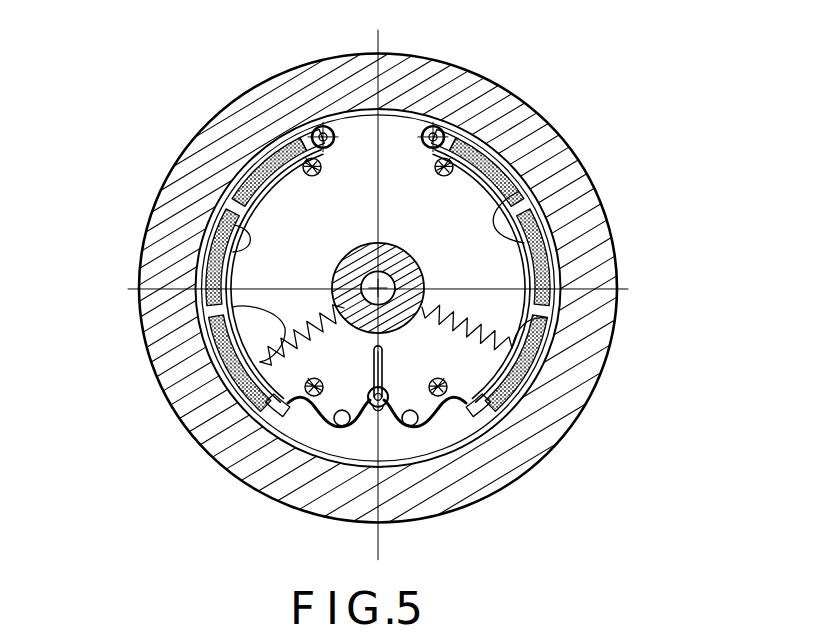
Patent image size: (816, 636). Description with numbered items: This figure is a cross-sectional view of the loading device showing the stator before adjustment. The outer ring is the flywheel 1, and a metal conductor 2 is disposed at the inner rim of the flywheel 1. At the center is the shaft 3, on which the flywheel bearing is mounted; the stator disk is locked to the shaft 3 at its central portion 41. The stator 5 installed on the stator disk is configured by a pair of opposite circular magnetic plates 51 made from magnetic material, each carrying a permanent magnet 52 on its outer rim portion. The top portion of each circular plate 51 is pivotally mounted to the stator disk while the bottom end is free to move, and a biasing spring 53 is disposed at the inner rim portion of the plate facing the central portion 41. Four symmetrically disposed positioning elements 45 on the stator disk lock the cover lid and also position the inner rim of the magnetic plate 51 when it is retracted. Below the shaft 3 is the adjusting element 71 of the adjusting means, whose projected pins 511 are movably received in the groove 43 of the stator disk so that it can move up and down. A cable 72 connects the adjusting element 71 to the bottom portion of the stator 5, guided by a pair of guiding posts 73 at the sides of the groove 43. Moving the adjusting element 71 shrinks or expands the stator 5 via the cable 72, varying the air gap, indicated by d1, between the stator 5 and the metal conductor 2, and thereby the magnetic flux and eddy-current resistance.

The flywheel 1 is at (192, 178).
The metal conductor 2 is at (348, 108).
The shaft 3 is at (395, 280).
The central portion 41 is at (400, 262).
The groove 43 is at (383, 352).
The stator 5 is at (270, 216).
The circular magnetic plate 51 is at (566, 195).
The shoe pivot pin 511 is at (434, 125).
The permanent magnet 52 is at (510, 140).
The biasing spring 53 is at (548, 318).
The positioning element 45 is at (540, 401).
The adjusting element 71 is at (383, 408).
The cable 72 is at (455, 415).
The guiding post 73 is at (412, 426).
The air gap dimension d1 is at (540, 364).